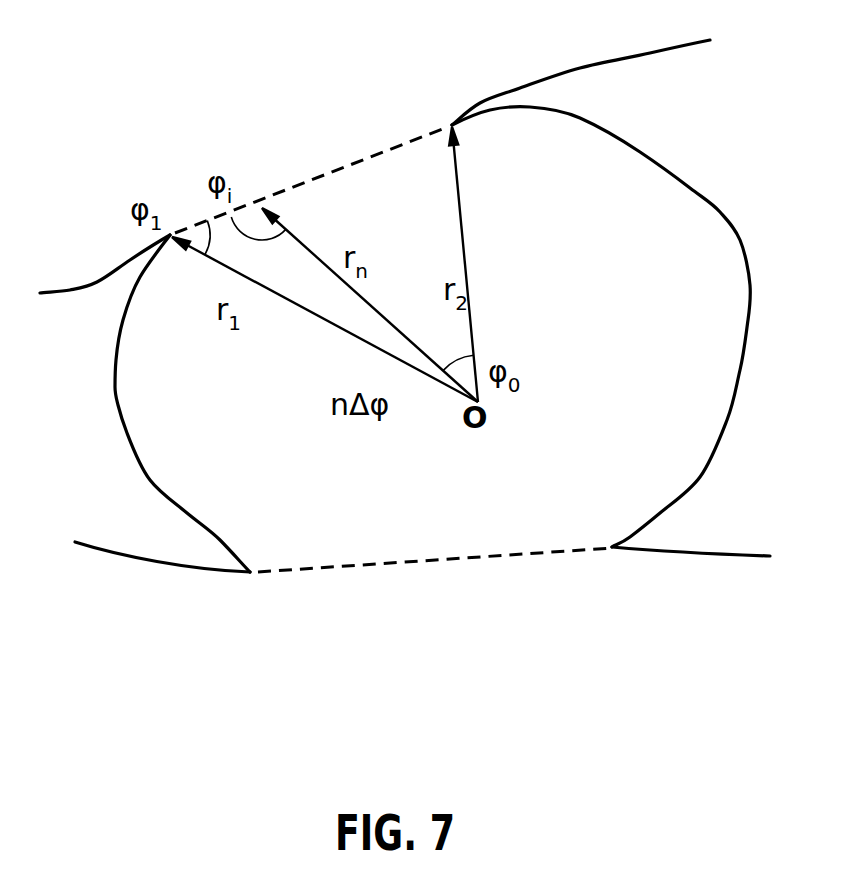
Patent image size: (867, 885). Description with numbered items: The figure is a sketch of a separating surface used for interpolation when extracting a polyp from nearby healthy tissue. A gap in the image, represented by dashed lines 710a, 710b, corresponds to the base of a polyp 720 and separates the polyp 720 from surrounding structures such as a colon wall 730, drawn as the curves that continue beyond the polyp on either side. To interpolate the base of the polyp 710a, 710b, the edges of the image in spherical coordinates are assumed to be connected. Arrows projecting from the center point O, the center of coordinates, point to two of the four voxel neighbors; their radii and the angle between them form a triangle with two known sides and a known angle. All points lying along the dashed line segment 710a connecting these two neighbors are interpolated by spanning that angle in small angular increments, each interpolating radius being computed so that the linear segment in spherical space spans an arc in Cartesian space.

The dashed line (gap at polyp base) 710a is at (317, 177).
The dashed line (gap at polyp base) 710b is at (368, 565).
The polyp 720 is at (733, 222).
The colon wall 730 is at (575, 67).